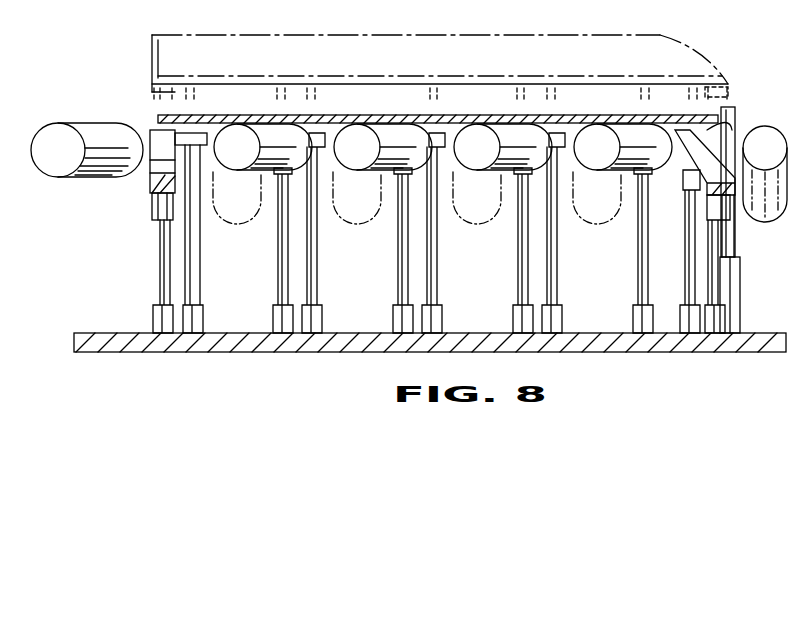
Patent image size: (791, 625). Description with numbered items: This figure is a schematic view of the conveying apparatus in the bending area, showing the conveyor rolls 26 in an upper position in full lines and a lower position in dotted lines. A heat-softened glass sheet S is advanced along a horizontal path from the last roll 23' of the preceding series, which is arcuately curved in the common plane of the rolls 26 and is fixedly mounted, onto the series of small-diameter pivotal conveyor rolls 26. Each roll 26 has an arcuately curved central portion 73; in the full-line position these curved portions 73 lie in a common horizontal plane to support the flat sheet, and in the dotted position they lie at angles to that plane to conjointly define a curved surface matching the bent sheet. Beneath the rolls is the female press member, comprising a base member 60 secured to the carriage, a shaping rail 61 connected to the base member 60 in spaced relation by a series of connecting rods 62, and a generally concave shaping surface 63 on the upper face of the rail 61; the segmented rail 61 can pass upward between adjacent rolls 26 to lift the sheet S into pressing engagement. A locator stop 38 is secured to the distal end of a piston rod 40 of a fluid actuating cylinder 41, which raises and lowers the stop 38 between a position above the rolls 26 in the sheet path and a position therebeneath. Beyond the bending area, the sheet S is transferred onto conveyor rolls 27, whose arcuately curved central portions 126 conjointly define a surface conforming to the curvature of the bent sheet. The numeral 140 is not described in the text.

The last roll 23' is at (71, 134).
The roller body 140 is at (97, 138).
The glass sheet S is at (160, 119).
The conveyor roll 26 is at (236, 108).
The locator stop 38 is at (730, 106).
The conveyor roll 27 is at (757, 112).
The shaping surface 63 is at (157, 163).
The shaping rail 61 is at (150, 194).
The connecting rod 62 is at (168, 262).
The arcuately curved central portion 73 is at (278, 153).
The base member 60 is at (80, 340).
The arcuately curved central portion 126 is at (767, 197).
The piston rod 40 is at (730, 242).
The fluid actuating cylinder 41 is at (735, 308).